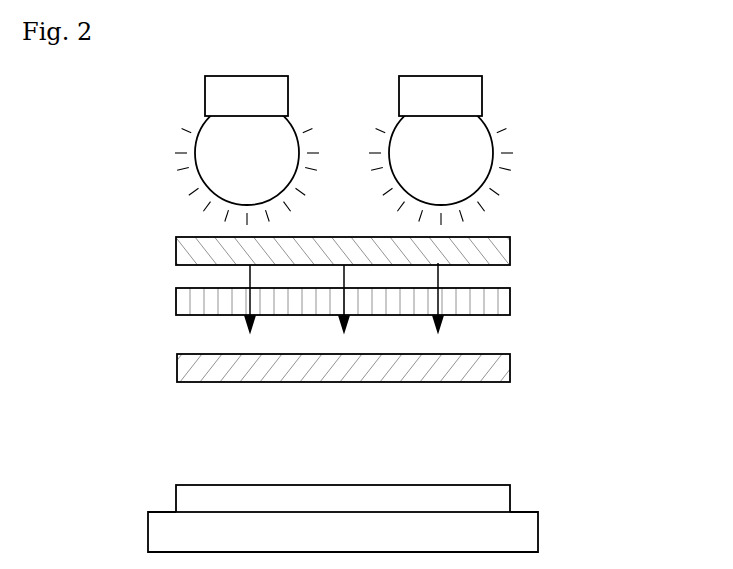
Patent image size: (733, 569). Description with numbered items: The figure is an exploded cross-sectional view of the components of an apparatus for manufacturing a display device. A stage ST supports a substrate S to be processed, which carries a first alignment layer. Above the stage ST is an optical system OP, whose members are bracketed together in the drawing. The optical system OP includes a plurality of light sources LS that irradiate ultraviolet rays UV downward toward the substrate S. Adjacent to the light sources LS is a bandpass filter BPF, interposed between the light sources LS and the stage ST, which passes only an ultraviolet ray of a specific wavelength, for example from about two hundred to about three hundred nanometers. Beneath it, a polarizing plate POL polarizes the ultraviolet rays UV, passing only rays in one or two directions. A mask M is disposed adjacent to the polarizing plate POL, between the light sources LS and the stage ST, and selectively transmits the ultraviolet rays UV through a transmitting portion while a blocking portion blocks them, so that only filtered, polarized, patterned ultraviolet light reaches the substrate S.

The light source LS is at (493, 147).
The bandpass filter BPF is at (176, 246).
The polarizing plate POL is at (176, 298).
The ultraviolet rays UV is at (438, 275).
The mask M is at (510, 366).
The optical system OP is at (648, 143).
The substrate to be processed S is at (510, 497).
The stage ST is at (533, 535).